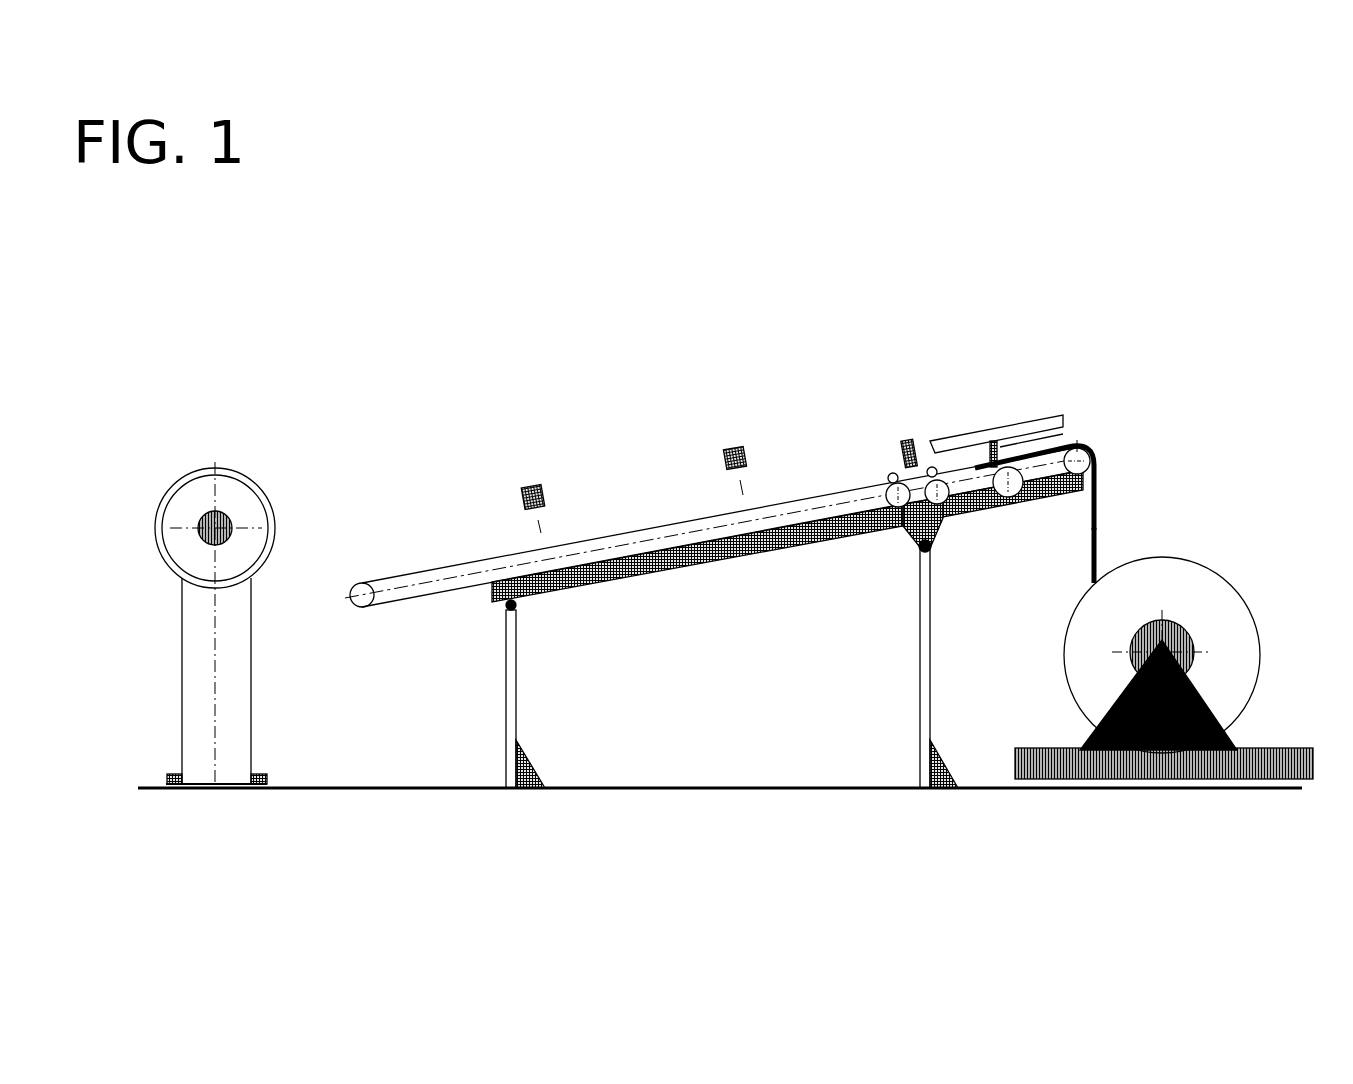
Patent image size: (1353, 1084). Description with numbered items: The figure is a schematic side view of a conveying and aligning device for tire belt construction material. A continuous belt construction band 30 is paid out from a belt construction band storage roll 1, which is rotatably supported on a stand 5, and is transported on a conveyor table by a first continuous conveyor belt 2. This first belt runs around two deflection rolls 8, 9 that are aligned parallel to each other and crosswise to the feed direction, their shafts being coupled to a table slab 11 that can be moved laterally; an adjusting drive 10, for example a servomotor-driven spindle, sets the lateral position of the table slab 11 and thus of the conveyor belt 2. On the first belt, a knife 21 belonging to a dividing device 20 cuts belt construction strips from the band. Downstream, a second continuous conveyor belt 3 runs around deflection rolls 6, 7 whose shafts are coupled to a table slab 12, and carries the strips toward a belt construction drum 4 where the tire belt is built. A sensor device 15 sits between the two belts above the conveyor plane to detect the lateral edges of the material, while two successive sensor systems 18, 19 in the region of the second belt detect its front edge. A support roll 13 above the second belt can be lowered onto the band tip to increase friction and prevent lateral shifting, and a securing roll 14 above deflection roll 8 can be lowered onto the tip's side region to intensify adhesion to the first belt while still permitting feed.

The belt construction band storage roll 1 is at (1213, 618).
The first continuous conveyor belt 2 is at (1048, 500).
The second continuous conveyor belt 3 is at (456, 590).
The belt construction drum 4 is at (225, 493).
The stand 5 is at (1203, 708).
The deflection roll 6 is at (356, 608).
The deflection roll 7 is at (880, 515).
The deflection roll 8 is at (925, 552).
The deflection roll 9 is at (1093, 457).
The adjusting drive 10 is at (1008, 492).
The table slab 11 is at (1093, 485).
The table slab 12 is at (680, 567).
The support roll 13 is at (887, 467).
The securing roll 14 is at (933, 467).
The sensor device 15 is at (903, 440).
The sensor system 18 is at (733, 445).
The sensor system 19 is at (525, 485).
The dividing device 20 is at (970, 440).
The knife 21 is at (1063, 432).
The belt construction band 30 is at (1096, 535).